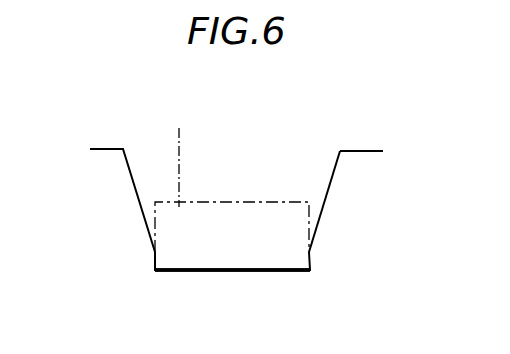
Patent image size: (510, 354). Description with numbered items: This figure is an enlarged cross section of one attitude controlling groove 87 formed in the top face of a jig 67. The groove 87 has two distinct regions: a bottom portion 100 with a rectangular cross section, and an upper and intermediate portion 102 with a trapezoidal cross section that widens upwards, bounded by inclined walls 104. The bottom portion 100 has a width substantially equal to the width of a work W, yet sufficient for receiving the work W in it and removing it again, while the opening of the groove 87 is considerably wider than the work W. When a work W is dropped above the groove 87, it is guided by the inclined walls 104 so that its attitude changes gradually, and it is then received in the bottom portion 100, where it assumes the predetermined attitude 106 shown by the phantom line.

The jig 67 is at (114, 142).
The work W is at (178, 156).
The attitude controlling groove 87 is at (247, 203).
The inclined wall 104 is at (340, 152).
The upper and intermediate portion 102 is at (328, 183).
The bottom portion 100 is at (311, 252).
The predetermined attitude 106 is at (238, 261).